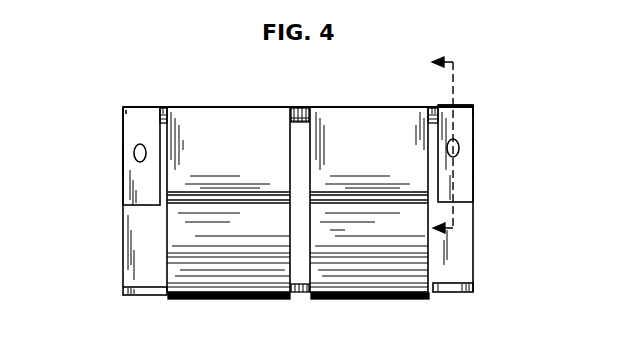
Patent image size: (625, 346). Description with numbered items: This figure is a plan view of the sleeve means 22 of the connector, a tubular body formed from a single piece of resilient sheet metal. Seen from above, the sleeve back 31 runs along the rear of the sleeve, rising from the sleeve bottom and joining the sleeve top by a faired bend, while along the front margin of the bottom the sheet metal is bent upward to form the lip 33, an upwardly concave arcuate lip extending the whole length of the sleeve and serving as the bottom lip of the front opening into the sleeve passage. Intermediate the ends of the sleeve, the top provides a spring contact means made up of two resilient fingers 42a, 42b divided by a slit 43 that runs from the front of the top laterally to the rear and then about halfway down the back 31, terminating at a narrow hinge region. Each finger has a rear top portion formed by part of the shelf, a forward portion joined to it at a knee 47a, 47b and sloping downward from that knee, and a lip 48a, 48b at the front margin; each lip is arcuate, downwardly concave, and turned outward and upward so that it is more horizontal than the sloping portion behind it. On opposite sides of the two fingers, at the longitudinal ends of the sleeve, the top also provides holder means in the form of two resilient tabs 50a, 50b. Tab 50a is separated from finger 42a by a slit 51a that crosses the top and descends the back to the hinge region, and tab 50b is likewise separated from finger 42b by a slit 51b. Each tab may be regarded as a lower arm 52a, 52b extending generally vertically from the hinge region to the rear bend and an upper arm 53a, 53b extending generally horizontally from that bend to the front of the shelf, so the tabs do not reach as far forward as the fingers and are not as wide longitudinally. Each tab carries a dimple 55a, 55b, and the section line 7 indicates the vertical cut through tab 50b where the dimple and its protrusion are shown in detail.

The section line 7- 7 is at (433, 146).
The sleeve means 22 is at (430, 250).
The back 31 is at (336, 106).
The lip 33 is at (126, 291).
The resilient finger 42a is at (270, 238).
The resilient finger 42b is at (386, 238).
The slit 43 is at (300, 106).
The knee 47a is at (210, 196).
The knee 47b is at (346, 196).
The lip 48a is at (224, 300).
The lip 48b is at (356, 300).
The resilient tab 50a is at (132, 191).
The resilient tab 50b is at (465, 191).
The slit 51a is at (165, 107).
The slit 51b is at (433, 106).
The lower arm 52a is at (138, 106).
The lower arm 52b is at (466, 106).
The upper arm 53a is at (122, 158).
The upper arm 53b is at (474, 158).
The dimple 55a is at (136, 150).
The dimple 55b is at (459, 148).